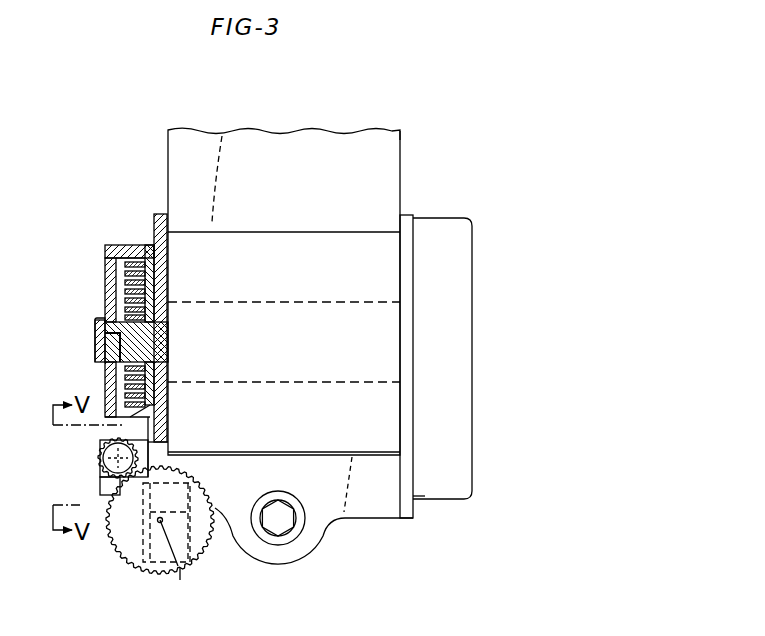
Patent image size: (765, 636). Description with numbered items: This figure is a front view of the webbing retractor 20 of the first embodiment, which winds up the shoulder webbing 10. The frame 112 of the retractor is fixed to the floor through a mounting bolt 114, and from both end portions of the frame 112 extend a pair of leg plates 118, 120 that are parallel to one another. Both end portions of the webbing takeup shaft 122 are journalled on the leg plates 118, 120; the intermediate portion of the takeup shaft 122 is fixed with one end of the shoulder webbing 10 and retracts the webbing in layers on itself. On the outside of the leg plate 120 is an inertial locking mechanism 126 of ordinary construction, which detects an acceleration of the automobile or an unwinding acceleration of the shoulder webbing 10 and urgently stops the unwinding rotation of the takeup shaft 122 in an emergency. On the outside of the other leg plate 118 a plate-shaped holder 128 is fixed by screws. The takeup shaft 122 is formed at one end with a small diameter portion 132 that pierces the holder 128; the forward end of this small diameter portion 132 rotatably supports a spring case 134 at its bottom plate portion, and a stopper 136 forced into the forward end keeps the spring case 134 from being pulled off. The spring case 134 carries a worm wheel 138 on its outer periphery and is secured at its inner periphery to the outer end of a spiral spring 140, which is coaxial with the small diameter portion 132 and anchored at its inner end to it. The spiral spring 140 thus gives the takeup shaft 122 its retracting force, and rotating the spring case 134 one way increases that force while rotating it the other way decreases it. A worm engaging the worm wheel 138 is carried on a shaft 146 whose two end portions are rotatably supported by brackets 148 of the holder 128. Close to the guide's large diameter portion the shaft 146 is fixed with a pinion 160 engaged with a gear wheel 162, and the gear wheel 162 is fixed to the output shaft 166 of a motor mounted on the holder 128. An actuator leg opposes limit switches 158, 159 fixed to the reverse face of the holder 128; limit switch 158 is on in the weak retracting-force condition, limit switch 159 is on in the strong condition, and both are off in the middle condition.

The shoulder webbing 10 is at (392, 160).
The webbing retractor 20 is at (410, 132).
The frame 112 is at (364, 510).
The mounting bolt 114 is at (287, 530).
The leg plate 118 is at (162, 212).
The leg plate 120 is at (415, 237).
The webbing takeup shaft 122 is at (278, 276).
The inertial locking mechanism 126 is at (445, 490).
The plate-shaped holder 128 is at (150, 241).
The small diameter portion 132 is at (128, 343).
The spring case 134 is at (108, 270).
The stopper 136 is at (98, 326).
The worm wheel 138 is at (125, 245).
The spiral spring 140 is at (130, 285).
The shaft 146 is at (112, 459).
The bracket 148 is at (102, 485).
The limit switch 158 is at (190, 522).
The limit switch 159 is at (205, 483).
The pinion 160 is at (98, 447).
The gear wheel 162 is at (125, 567).
The output shaft 166 is at (180, 563).